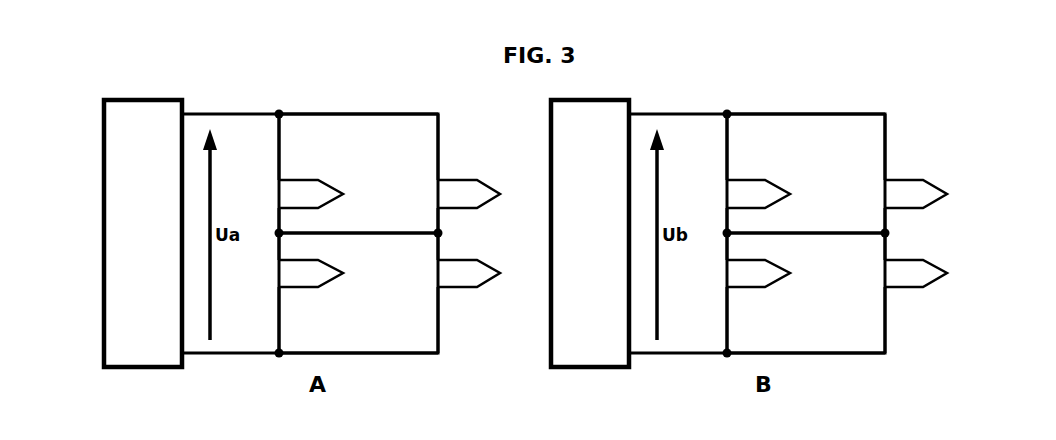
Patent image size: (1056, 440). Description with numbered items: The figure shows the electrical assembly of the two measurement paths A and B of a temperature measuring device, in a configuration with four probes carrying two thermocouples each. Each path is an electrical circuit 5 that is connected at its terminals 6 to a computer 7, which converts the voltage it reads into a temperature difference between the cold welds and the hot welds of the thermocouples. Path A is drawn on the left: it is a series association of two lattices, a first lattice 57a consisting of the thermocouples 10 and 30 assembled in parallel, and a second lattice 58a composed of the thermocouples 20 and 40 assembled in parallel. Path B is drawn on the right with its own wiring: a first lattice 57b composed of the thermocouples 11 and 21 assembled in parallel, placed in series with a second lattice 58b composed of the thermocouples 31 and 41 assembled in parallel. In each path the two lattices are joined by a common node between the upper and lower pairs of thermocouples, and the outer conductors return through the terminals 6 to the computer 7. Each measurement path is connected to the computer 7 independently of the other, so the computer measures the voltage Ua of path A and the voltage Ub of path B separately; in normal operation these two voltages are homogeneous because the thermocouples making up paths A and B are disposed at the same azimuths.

The electrical circuit 5 is at (311, 52).
The terminals 6 is at (232, 113).
The computer 7 is at (148, 243).
The thermocouple 10 is at (323, 194).
The thermocouple 20 is at (323, 273).
The thermocouple 30 is at (480, 194).
The thermocouple 40 is at (480, 273).
The thermocouple 11 is at (770, 194).
The thermocouple 31 is at (770, 273).
The thermocouple 21 is at (928, 194).
The thermocouple 41 is at (928, 273).
The first lattice 57a is at (362, 146).
The second lattice 58a is at (362, 323).
The first lattice 57b is at (810, 146).
The second lattice 58b is at (810, 323).